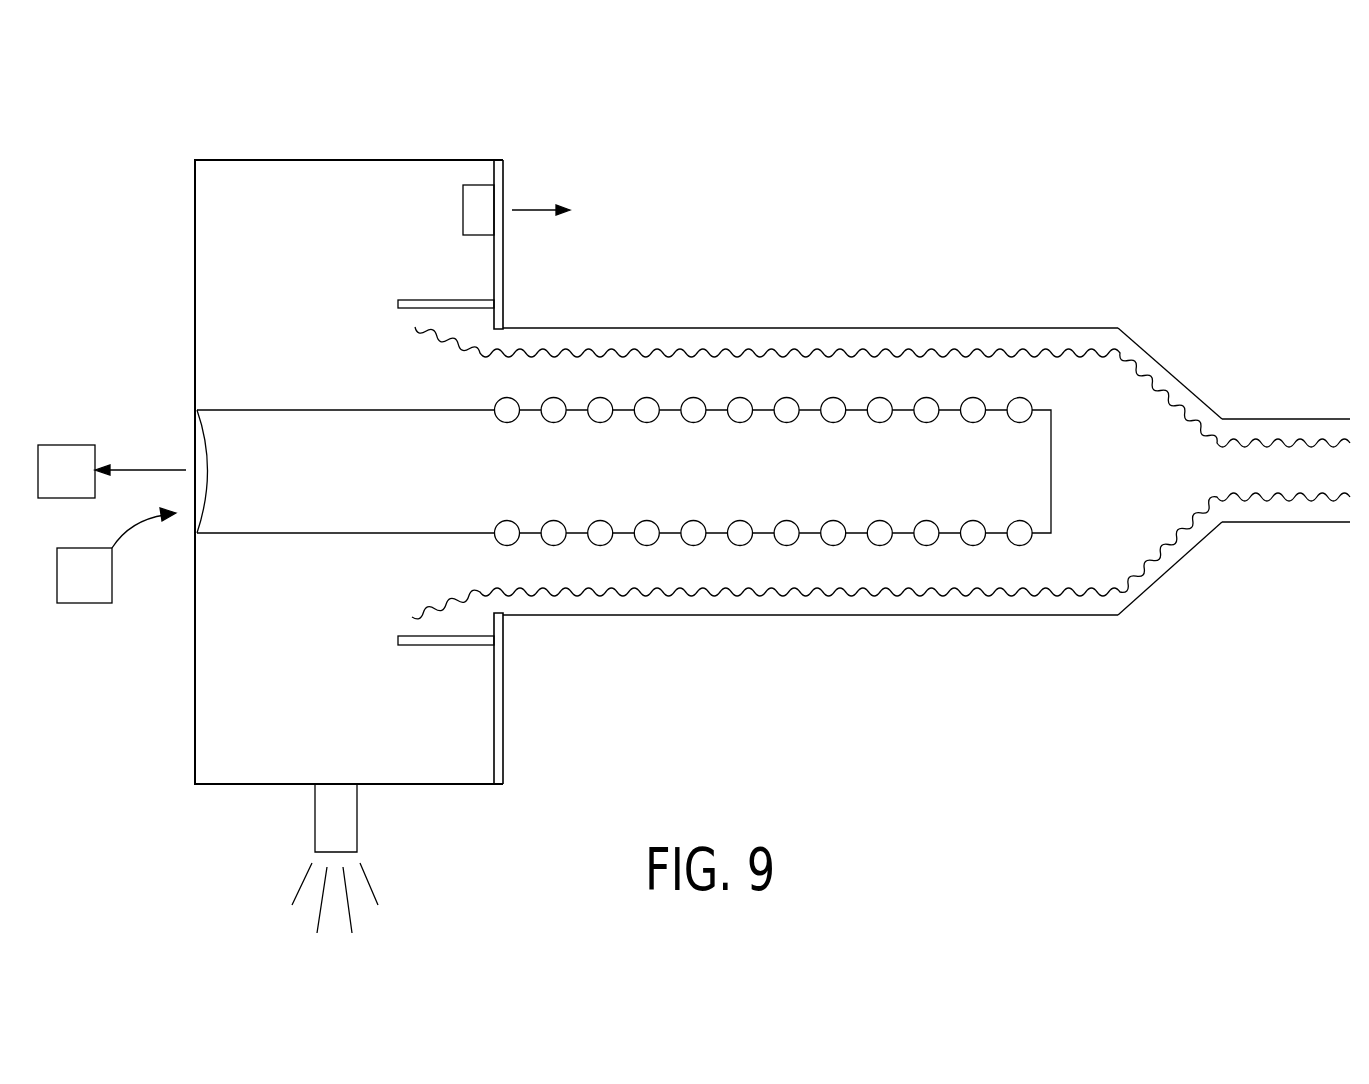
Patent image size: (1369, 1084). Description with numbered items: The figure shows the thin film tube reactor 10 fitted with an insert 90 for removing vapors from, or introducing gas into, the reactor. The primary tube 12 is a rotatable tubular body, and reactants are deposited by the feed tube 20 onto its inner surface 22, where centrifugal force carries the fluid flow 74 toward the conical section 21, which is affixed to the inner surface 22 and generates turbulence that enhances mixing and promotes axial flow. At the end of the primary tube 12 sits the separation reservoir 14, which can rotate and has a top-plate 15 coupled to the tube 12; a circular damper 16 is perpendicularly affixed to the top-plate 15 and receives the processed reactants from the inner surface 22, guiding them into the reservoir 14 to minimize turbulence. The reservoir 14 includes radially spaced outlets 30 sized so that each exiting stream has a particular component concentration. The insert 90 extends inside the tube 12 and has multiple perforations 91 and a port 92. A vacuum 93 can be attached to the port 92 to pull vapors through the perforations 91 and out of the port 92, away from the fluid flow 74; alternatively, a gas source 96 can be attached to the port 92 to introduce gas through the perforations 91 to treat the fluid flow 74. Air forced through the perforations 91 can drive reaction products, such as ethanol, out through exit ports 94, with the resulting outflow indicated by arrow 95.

The tube reactor 10 is at (1160, 180).
The primary tube 12 is at (814, 328).
The separation reservoir 14 is at (350, 160).
The top-plate 15 is at (505, 280).
The damper 16 is at (418, 300).
The feed tube 20 is at (1290, 419).
The conical section 21 is at (1170, 365).
The inner surface 22 is at (968, 612).
The outlet 30 is at (313, 812).
The fluid flow 74 is at (783, 603).
The insert 90 is at (942, 485).
The perforations 91 is at (690, 423).
The port 92 is at (195, 433).
The vacuum 93 is at (83, 488).
The exit ports 94 is at (482, 185).
The gas flow 95 is at (530, 205).
The gas source 96 is at (102, 594).